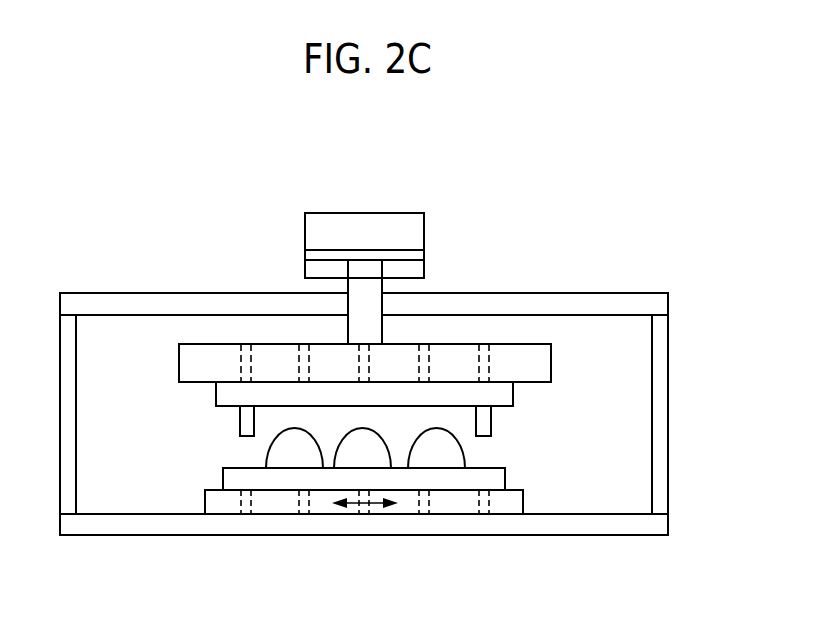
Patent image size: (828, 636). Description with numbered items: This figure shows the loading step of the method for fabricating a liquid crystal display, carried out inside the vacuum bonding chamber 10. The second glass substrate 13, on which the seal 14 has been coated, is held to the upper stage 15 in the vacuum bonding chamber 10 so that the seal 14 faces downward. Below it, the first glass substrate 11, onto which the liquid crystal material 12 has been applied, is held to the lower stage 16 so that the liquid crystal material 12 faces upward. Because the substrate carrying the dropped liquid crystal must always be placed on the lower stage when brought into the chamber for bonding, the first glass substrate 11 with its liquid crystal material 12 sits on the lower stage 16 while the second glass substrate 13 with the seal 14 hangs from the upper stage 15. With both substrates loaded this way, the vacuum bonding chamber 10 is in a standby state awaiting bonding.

The vacuum bonding chamber 10 is at (662, 403).
The first glass substrate 11 is at (500, 481).
The liquid crystal material 12 is at (282, 457).
The second glass substrate 13 is at (505, 395).
The seal 14 is at (245, 419).
The upper stage 15 is at (525, 358).
The lower stage 16 is at (505, 507).